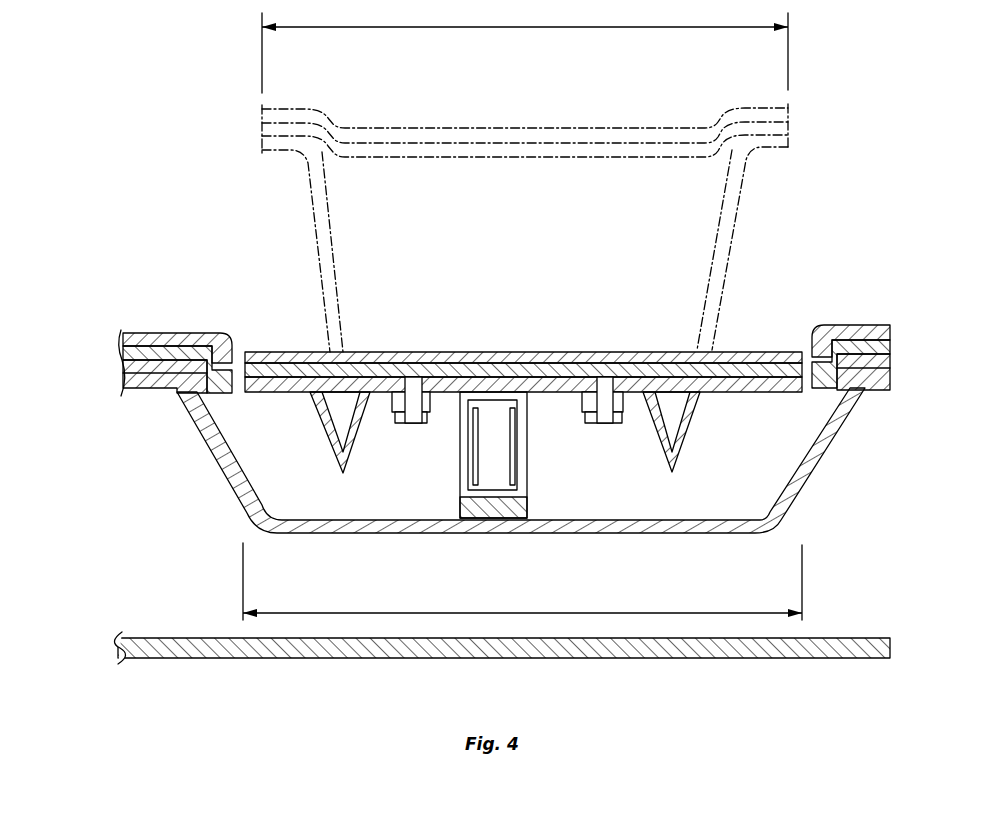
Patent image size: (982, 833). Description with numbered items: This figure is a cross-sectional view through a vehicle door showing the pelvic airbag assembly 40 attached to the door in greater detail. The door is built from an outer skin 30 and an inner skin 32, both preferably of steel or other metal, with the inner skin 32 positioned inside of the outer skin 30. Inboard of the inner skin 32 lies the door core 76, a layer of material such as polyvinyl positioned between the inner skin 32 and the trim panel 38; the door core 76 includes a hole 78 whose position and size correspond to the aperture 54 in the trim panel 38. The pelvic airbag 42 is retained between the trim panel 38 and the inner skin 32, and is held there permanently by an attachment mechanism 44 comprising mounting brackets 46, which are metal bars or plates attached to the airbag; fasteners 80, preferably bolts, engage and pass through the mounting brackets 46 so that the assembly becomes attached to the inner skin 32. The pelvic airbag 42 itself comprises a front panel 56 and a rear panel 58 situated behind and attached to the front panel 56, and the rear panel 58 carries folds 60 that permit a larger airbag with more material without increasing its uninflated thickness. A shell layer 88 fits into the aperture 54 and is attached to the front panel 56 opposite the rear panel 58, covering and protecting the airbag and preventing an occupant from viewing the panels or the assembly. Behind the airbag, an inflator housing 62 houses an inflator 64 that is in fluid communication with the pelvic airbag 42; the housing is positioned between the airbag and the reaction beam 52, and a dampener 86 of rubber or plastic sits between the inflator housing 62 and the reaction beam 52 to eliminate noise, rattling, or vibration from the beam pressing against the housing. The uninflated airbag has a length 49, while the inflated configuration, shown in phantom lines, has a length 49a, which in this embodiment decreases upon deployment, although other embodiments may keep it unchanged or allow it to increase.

The outer skin 30 is at (805, 660).
The inner skin 32 is at (115, 368).
The trim panel 38 is at (145, 333).
The pelvic airbag assembly 40 is at (202, 525).
The pelvic airbag 42 is at (632, 148).
The attachment mechanism 44 is at (387, 412).
The mounting bracket 46 is at (430, 406).
The length 49 is at (610, 612).
The length 49a is at (423, 27).
The reaction beam 52 is at (812, 491).
The aperture 54 is at (237, 390).
The front panel 56 is at (652, 352).
The rear panel 58 is at (738, 363).
The fold 60 is at (313, 243).
The inflator housing 62 is at (463, 497).
The inflator 64 is at (503, 448).
The door core 76 is at (115, 351).
The hole 78 is at (238, 395).
The fastener 80 is at (411, 427).
The dampener 86 is at (500, 513).
The shell layer 88 is at (420, 136).